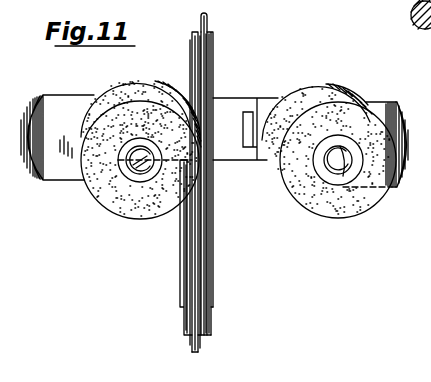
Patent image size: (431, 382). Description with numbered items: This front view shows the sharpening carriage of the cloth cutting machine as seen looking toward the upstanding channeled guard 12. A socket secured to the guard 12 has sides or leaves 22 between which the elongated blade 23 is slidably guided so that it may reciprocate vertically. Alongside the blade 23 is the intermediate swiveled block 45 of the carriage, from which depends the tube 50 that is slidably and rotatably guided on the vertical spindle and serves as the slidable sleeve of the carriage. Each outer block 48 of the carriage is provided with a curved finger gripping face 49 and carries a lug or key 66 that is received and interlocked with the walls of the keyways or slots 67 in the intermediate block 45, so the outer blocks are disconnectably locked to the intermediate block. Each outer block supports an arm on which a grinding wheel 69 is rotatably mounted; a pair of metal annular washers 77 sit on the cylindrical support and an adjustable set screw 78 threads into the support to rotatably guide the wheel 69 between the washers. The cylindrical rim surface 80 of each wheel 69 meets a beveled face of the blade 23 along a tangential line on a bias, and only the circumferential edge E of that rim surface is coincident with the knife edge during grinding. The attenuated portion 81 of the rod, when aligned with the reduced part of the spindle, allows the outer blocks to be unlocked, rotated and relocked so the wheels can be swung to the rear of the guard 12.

The upstanding channeled guard 12 is at (185, 271).
The sides or leaves of socket 22 is at (207, 56).
The elongated blade 23 is at (207, 22).
The intermediate swiveled block 45 is at (228, 101).
The outer block 48 is at (70, 160).
The curved finger gripping face 49 is at (268, 100).
The tube 50 is at (180, 255).
The lug or key 66 is at (140, 81).
The keyways or slots 67 is at (180, 104).
The grinding wheel 69 is at (90, 126).
The metal annular washers 77 is at (133, 172).
The adjustable set screw 78 is at (112, 201).
The cylindrical rim surface 80 is at (109, 89).
The attenuated portion of rod 81 is at (160, 186).
The circumferential edge E is at (88, 192).